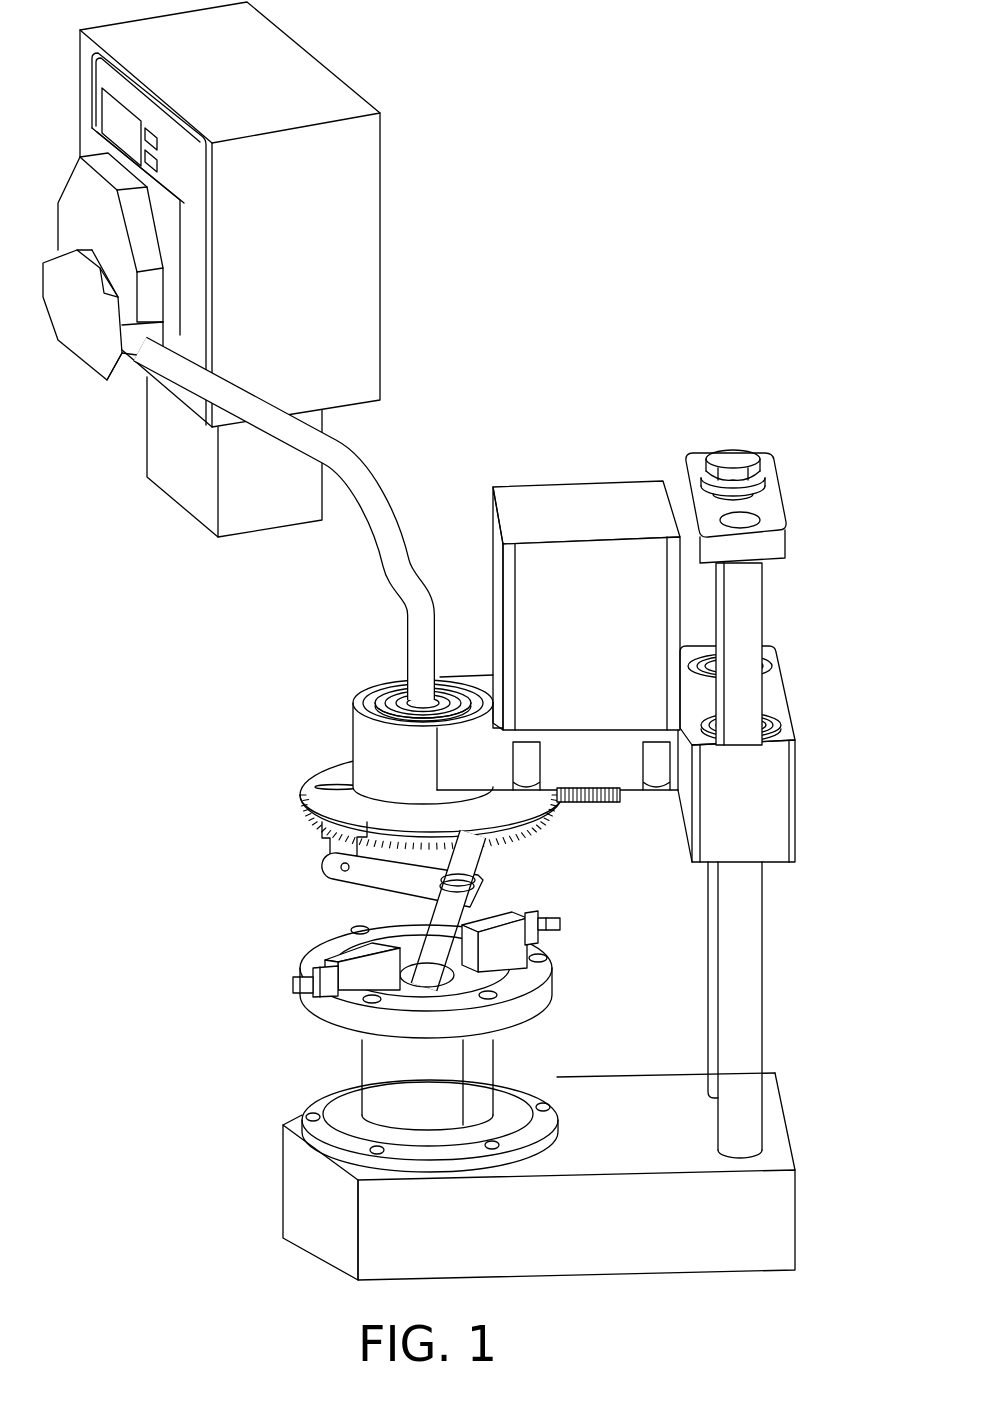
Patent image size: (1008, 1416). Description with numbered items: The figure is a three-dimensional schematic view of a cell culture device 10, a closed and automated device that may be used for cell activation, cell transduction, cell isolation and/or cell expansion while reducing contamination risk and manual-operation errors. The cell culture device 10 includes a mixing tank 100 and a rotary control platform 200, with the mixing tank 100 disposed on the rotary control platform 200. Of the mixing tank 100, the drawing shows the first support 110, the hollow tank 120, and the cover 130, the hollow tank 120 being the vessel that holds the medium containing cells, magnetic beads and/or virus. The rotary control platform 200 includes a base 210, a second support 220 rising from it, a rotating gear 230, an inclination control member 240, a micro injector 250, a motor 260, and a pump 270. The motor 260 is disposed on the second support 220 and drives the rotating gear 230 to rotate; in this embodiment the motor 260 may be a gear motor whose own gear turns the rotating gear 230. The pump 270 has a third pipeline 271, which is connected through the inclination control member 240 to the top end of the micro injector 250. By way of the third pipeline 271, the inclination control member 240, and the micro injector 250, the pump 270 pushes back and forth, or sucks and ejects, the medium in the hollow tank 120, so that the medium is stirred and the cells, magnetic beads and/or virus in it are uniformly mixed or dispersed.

The cell culture device 10 is at (462, 655).
The mixing tank 100 is at (356, 1041).
The first support 110 is at (384, 1126).
The hollow tank 120 is at (380, 1063).
The cover 130 is at (333, 947).
The rotary control platform 200 is at (510, 814).
The base 210 is at (782, 1222).
The second support 220 is at (775, 800).
The rotating gear 230 is at (328, 774).
The inclination control member 240 is at (333, 830).
The micro injector 250 is at (423, 923).
The motor 260 is at (583, 493).
The pump 270 is at (297, 62).
The third pipeline 271 is at (377, 525).